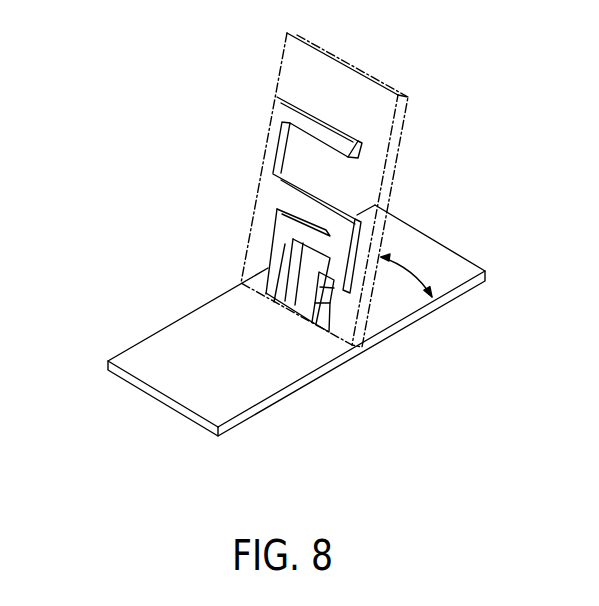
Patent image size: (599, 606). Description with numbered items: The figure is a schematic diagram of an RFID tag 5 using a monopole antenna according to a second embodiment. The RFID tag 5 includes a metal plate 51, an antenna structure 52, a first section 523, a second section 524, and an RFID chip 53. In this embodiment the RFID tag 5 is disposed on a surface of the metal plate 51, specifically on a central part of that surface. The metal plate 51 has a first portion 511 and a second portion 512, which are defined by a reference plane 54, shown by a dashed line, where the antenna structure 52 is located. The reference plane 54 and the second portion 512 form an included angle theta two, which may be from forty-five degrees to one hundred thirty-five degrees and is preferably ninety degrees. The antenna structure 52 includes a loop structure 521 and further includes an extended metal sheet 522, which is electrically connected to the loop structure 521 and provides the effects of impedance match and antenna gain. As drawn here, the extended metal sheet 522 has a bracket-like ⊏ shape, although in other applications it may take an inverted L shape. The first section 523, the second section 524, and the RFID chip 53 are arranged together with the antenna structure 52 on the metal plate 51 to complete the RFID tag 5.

The RFID tag 5 is at (137, 84).
The metal plate 51 is at (187, 333).
The first portion 511 is at (283, 354).
The second portion 512 is at (412, 249).
The antenna structure 52 is at (275, 182).
The loop structure 521 is at (275, 237).
The extended metal sheet 522 is at (325, 133).
The first section 523 is at (279, 268).
The second section 524 is at (330, 298).
The RFID chip 53 is at (335, 294).
The reference plane 54 is at (374, 75).